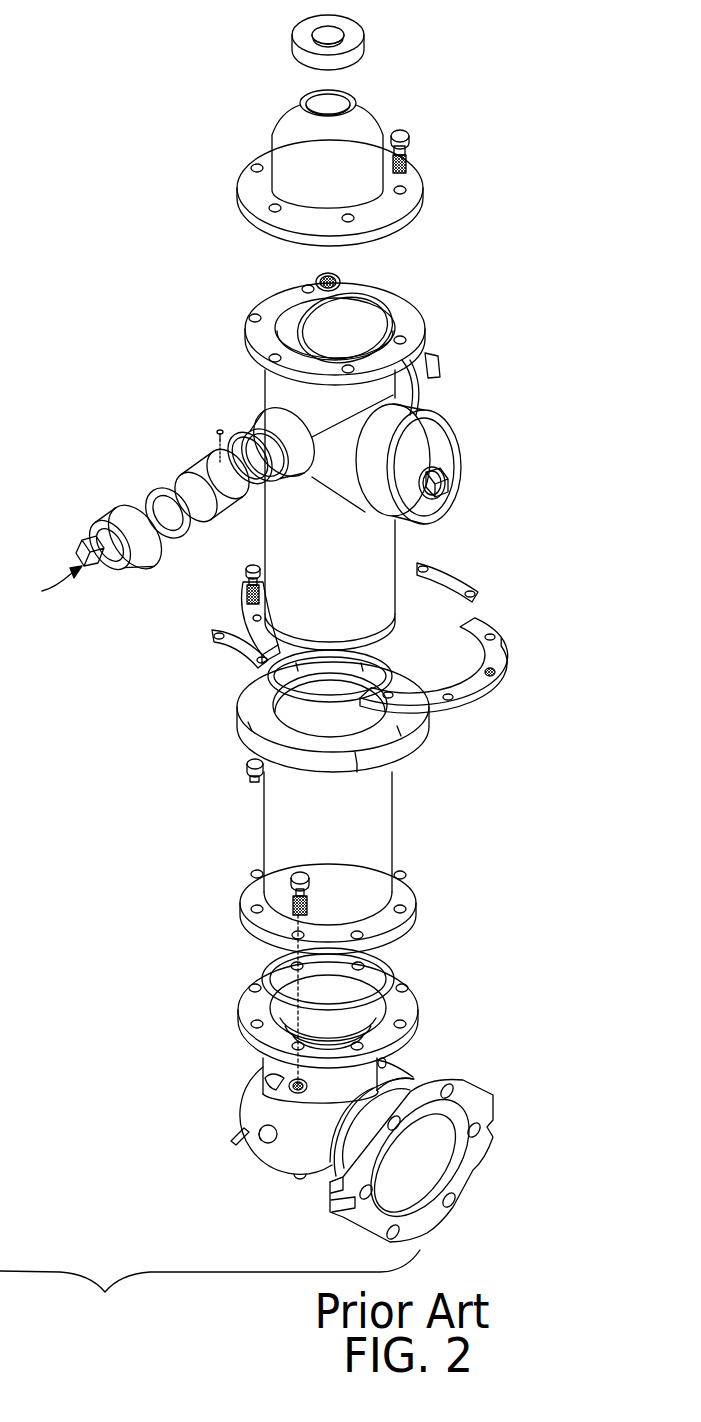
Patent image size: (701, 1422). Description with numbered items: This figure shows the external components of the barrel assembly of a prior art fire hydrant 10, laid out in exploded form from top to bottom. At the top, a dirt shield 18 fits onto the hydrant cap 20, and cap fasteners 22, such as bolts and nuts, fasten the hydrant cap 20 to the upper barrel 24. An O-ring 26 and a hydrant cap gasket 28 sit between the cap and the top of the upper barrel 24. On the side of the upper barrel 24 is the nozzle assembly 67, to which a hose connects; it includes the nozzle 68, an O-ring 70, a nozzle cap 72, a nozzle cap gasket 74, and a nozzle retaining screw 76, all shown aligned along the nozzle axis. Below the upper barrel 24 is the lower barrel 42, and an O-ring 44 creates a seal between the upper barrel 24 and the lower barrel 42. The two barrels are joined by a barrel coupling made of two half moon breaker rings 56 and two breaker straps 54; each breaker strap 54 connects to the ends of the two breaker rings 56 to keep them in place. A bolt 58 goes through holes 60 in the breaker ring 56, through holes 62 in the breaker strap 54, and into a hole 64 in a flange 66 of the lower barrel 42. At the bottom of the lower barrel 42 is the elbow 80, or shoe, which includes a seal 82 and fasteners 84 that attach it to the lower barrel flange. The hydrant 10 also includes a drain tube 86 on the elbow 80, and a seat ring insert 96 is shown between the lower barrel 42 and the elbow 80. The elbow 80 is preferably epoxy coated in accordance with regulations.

The fire hydrant 10 is at (210, 1284).
The dirt shield 18 is at (352, 44).
The hydrant cap 20 is at (247, 183).
The cap fasteners 22 is at (410, 140).
The upper barrel 24 is at (420, 346).
The O-ring 26 is at (342, 278).
The hydrant cap gasket 28 is at (362, 318).
The lower barrel 42 is at (344, 793).
The O-ring 44 is at (290, 690).
The breaker strap 54 is at (325, 614).
The breaker ring 56 is at (242, 602).
The bolt 58 is at (248, 576).
The holes 60 is at (492, 676).
The holes 62 is at (212, 638).
The hole 64 is at (392, 772).
The flange 66 is at (248, 752).
The nozzle assembly 67 is at (45, 584).
The nozzle 68 is at (207, 470).
The O-ring 70 is at (243, 440).
The nozzle cap 72 is at (98, 525).
The nozzle cap gasket 74 is at (158, 500).
The nozzle retaining screw 76 is at (217, 428).
The elbow 80 is at (472, 1100).
The seal 82 is at (362, 930).
The fasteners 84 is at (295, 892).
The drain tube 86 is at (232, 1138).
The seat ring insert 96 is at (262, 975).